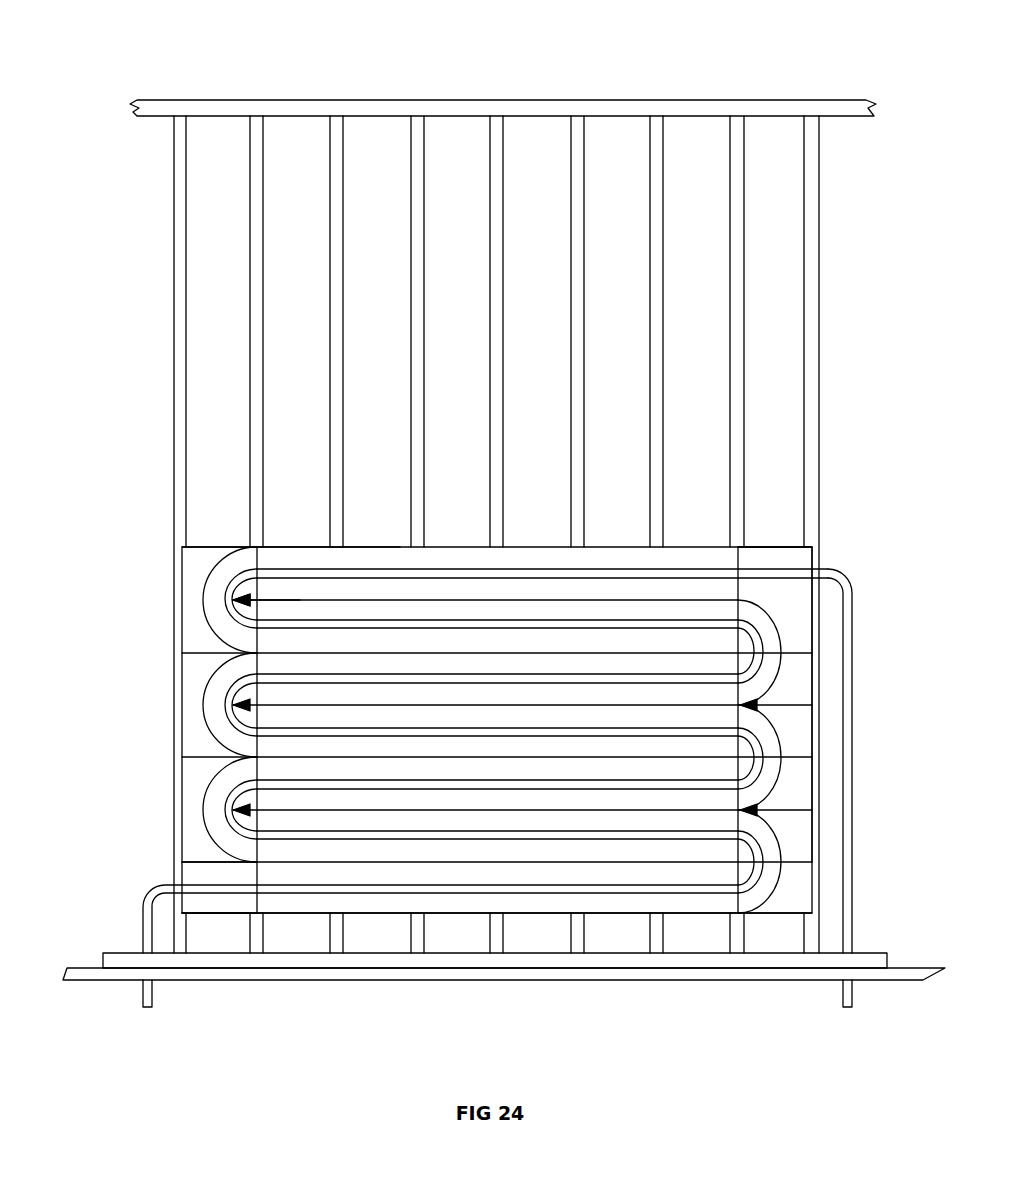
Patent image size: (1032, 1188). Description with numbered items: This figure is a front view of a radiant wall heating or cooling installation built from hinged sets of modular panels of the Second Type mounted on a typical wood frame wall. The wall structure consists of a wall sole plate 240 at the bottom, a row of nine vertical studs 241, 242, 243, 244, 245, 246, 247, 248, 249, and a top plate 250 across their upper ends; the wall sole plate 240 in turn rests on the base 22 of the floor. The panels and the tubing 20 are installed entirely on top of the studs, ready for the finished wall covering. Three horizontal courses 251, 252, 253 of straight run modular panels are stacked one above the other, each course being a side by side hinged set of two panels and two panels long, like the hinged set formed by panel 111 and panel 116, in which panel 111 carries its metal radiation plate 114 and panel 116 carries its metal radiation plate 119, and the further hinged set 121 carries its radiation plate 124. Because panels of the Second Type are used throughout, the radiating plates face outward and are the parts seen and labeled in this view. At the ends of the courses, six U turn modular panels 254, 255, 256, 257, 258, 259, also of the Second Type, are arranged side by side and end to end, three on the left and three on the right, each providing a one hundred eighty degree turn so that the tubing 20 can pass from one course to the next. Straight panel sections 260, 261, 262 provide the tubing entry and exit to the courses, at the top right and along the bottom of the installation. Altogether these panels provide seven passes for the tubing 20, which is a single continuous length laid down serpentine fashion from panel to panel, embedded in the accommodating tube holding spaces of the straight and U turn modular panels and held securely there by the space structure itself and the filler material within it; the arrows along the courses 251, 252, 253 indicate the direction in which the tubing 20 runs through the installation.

The tubing 20 is at (852, 838).
The base plate 22 is at (655, 985).
The panel 111 is at (291, 521).
The metal radiation plate 114 is at (400, 553).
The panel 116 is at (470, 585).
The metal radiation plate 119 is at (568, 606).
The hinged set of panels 121 is at (638, 632).
The radiation plate 124 is at (683, 661).
The wall sole plate 240 is at (887, 952).
The stud 241 is at (186, 410).
The stud 242 is at (264, 417).
The stud 243 is at (344, 420).
The stud 244 is at (425, 428).
The stud 245 is at (504, 428).
The stud 246 is at (585, 425).
The stud 247 is at (664, 423).
The stud 248 is at (745, 423).
The stud 249 is at (819, 395).
The top plate 250 is at (394, 97).
The course of straight run modular panels 251 is at (233, 600).
The course of straight run modular panels 252 is at (233, 705).
The course of straight run modular panels 253 is at (233, 810).
The U turn modular panel 254 is at (193, 558).
The U turn modular panel 255 is at (200, 677).
The U turn modular panel 256 is at (200, 783).
The U turn modular panel 257 is at (793, 612).
The U turn modular panel 258 is at (795, 720).
The U turn modular panel 259 is at (797, 825).
The straight panel section 260 is at (210, 903).
The straight panel section 261 is at (785, 548).
The straight panel section 262 is at (460, 928).